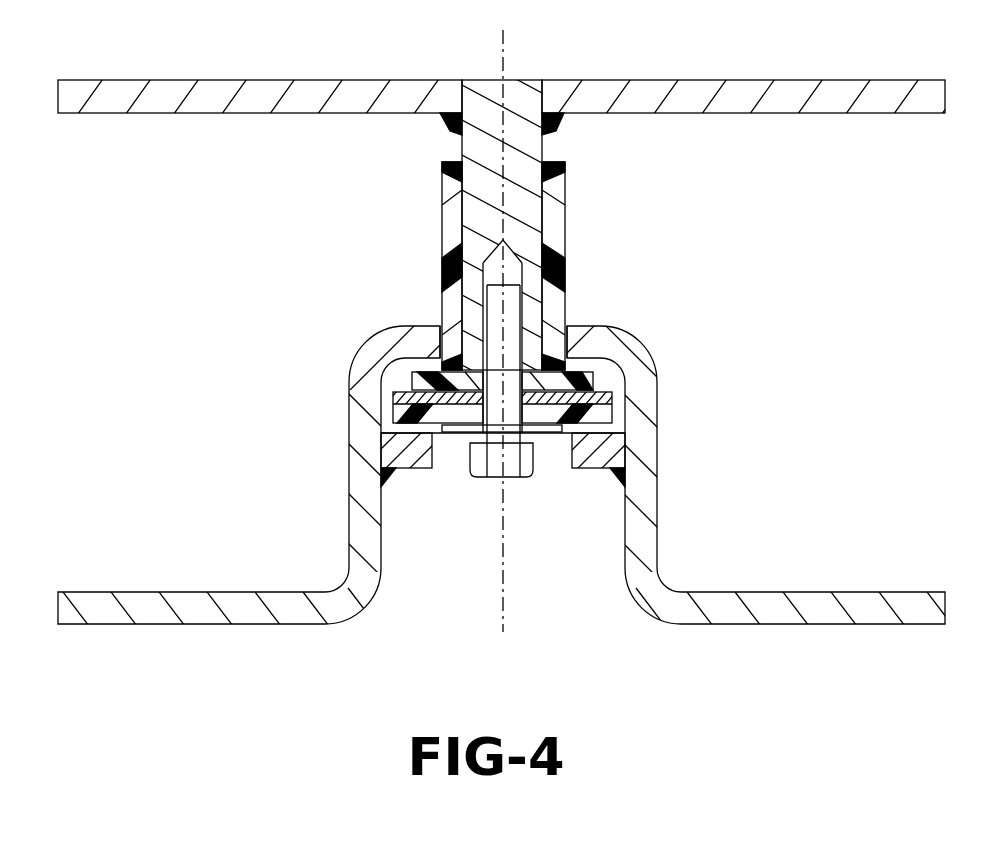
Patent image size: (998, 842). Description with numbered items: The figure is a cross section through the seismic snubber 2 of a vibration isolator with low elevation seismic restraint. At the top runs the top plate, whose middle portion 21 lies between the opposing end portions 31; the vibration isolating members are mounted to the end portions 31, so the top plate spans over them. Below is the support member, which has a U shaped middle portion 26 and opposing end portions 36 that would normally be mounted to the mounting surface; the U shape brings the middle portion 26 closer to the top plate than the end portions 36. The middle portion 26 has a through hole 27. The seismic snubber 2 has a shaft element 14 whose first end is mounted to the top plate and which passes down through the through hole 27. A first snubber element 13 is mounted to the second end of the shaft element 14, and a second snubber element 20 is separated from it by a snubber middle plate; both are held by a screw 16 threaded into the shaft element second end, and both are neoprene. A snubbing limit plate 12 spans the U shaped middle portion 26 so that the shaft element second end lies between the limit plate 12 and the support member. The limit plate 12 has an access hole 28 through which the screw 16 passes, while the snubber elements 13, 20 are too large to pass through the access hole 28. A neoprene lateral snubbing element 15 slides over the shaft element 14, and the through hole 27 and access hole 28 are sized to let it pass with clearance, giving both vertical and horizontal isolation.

The seismic snubber 2 is at (547, 281).
The snubbing limit plate 12 is at (610, 453).
The first snubber element 13 is at (597, 372).
The shaft element 14 is at (485, 97).
The lateral snubbing element 15 is at (457, 215).
The screw 16 is at (527, 457).
The second snubber element 20 is at (597, 415).
The middle portion of top plate 21 is at (547, 80).
The middle portion of support member 26 is at (428, 326).
The through hole 27 is at (569, 324).
The access hole 28 is at (447, 457).
The end portions of top plate 31 is at (501, 75).
The end portions of support member 36 is at (503, 455).